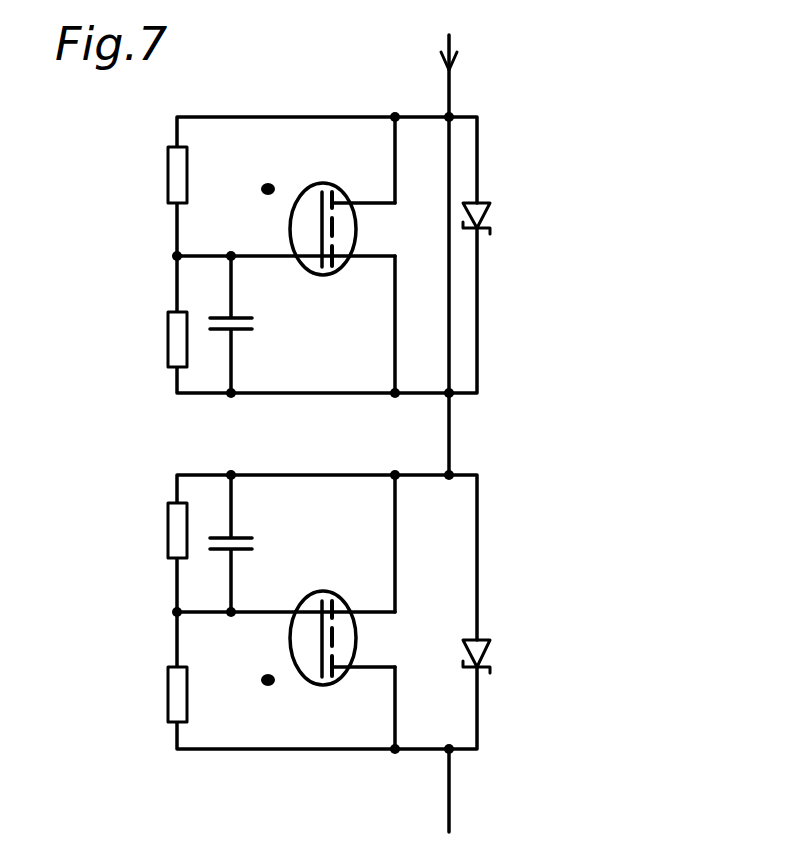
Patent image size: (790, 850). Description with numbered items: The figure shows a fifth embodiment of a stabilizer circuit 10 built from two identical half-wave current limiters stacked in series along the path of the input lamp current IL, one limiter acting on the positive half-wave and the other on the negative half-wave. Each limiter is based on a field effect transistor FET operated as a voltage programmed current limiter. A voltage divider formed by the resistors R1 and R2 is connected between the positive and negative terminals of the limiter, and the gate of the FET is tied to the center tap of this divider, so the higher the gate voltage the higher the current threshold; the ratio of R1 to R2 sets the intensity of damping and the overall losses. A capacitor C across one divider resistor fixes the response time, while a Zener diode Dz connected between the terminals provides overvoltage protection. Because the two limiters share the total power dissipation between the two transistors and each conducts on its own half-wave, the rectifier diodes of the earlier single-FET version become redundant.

The stabilizer circuit 10 is at (553, 337).
The input lamp current IL is at (484, 76).
The resistor R1 is at (154, 339).
The resistor R2 is at (154, 175).
The capacitor C is at (243, 324).
The field effect transistor FET is at (328, 216).
The Zener diode Dz is at (512, 218).